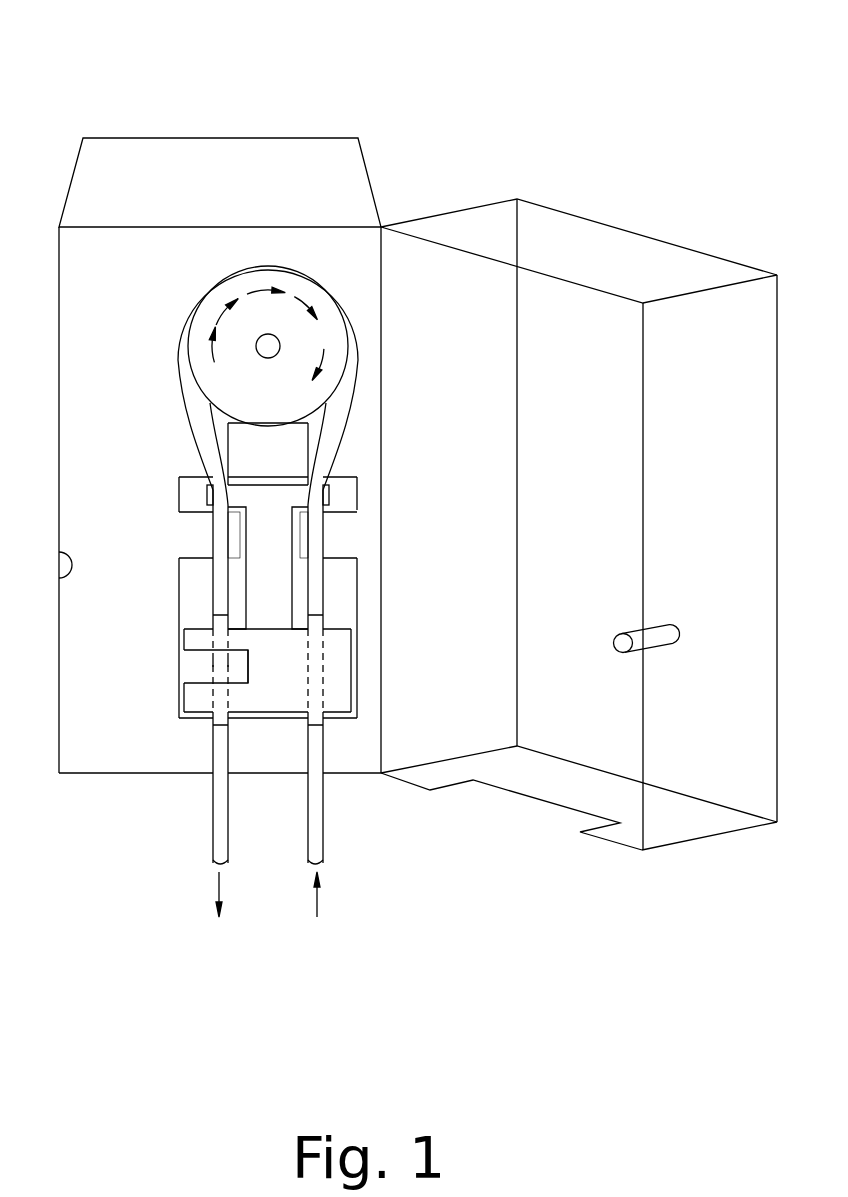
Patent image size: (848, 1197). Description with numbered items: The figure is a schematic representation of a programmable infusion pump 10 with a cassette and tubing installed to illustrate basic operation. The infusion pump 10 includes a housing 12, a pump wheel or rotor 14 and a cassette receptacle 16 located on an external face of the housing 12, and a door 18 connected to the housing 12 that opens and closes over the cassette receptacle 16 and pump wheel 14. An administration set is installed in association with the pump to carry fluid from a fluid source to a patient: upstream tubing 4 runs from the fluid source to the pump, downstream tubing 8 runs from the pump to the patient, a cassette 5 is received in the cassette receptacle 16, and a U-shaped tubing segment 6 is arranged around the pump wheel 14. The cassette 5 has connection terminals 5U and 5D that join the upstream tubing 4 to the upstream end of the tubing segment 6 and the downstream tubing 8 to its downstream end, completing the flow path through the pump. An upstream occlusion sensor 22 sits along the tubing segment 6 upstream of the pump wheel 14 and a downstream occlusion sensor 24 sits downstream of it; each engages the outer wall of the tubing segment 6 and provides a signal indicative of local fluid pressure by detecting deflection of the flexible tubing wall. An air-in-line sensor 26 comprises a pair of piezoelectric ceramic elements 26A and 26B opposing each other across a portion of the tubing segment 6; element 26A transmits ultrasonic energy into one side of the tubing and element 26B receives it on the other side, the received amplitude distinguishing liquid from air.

The infusion pump 10 is at (108, 68).
The housing 12 is at (315, 136).
The door 18 is at (633, 232).
The U-shaped tubing segment 6 is at (197, 302).
The pump wheel or rotor 14 is at (285, 392).
The cassette receptacle 16 is at (182, 606).
The downstream occlusion sensor 24 is at (206, 545).
The upstream occlusion sensor 22 is at (358, 546).
The cassette 5 is at (287, 682).
The downstream connection terminal 5D is at (219, 615).
The upstream connection terminal 5U is at (312, 615).
The air-in-line sensor 26 is at (252, 654).
The piezoelectric ceramic element 26A is at (237, 672).
The piezoelectric ceramic element 26B is at (213, 681).
The downstream tubing 8 is at (213, 810).
The upstream tubing 4 is at (323, 810).